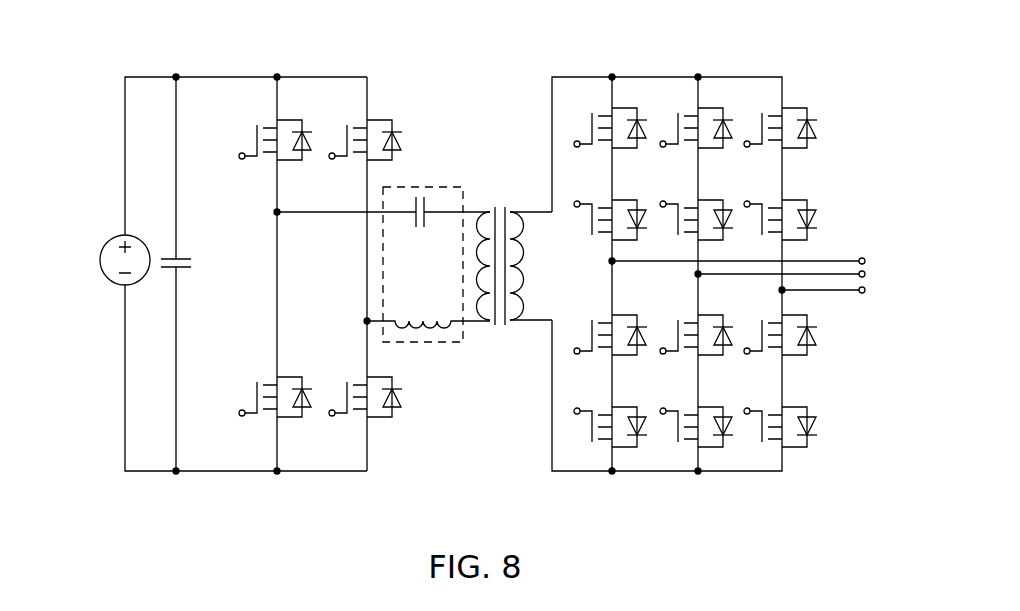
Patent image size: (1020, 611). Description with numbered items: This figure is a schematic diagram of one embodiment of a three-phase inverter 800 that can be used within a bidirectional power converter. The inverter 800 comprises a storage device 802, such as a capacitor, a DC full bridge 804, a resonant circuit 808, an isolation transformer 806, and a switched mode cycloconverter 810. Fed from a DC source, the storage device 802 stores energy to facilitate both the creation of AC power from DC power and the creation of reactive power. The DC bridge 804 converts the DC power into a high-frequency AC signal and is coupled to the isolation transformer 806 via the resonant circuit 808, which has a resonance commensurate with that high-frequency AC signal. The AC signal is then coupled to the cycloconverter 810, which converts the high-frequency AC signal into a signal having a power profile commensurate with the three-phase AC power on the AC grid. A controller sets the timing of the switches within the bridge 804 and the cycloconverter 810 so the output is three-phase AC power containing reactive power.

The three-phase inverter 800 is at (842, 52).
The storage device 802 is at (185, 257).
The DC full bridge 804 is at (253, 290).
The isolation transformer 806 is at (500, 336).
The resonant circuit 808 is at (432, 156).
The switched mode cycloconverter 810 is at (821, 181).